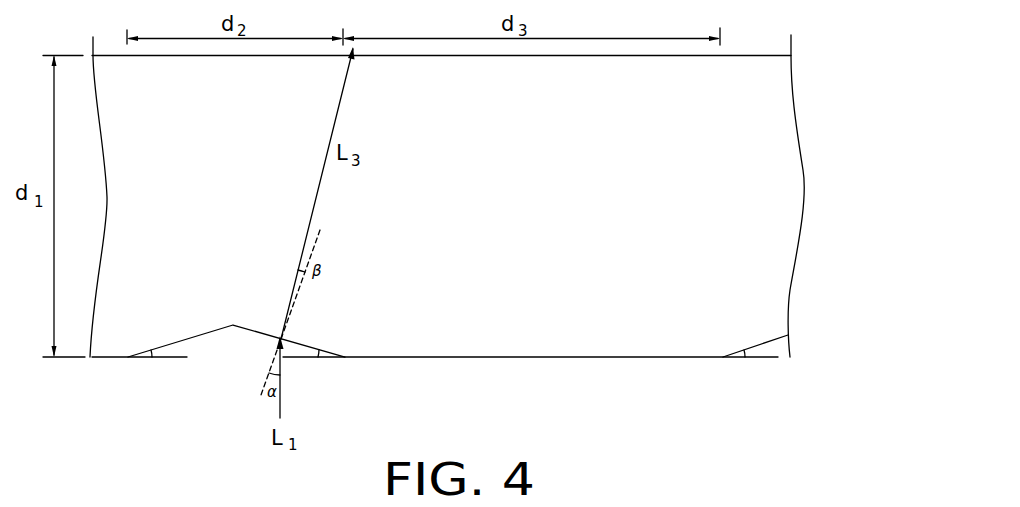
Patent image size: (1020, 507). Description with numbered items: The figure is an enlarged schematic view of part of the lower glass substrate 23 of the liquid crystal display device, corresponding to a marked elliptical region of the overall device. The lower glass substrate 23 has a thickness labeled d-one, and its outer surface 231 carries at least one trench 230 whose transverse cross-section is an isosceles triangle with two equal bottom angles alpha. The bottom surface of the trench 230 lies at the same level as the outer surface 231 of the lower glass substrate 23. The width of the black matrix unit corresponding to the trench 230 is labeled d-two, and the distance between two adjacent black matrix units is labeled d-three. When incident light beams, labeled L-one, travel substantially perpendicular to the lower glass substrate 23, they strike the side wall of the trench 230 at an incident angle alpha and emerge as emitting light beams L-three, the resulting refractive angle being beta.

The lower glass substrate 23 is at (765, 200).
The trench 230 is at (230, 340).
The outer surface 231 is at (620, 356).